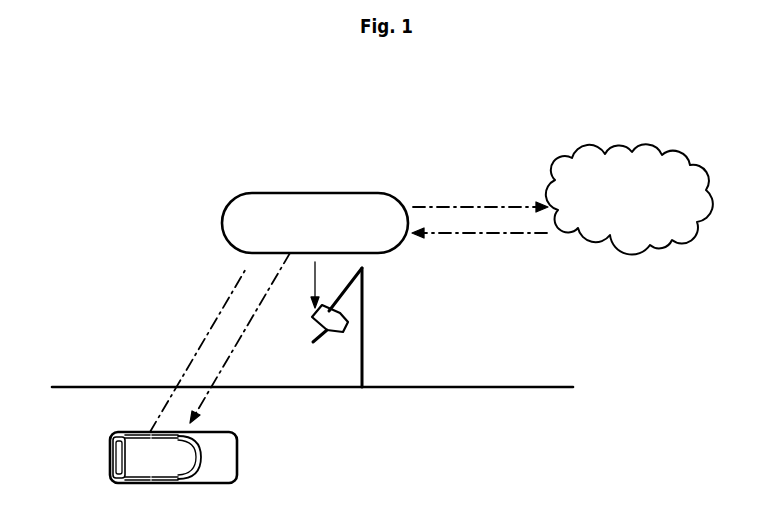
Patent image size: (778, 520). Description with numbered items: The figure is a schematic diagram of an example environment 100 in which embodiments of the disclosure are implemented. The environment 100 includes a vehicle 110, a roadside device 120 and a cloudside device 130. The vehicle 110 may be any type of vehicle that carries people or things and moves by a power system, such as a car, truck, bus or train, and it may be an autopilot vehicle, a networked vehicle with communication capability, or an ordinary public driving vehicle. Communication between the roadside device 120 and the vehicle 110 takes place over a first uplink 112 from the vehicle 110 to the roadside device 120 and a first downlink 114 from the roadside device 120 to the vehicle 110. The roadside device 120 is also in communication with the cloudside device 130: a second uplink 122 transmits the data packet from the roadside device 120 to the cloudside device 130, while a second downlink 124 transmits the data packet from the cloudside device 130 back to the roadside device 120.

The environment 100 is at (124, 118).
The vehicle 110 is at (237, 452).
The first uplink 112 is at (210, 328).
The first downlink 114 is at (228, 357).
The roadside device 120 is at (335, 193).
The second uplink 122 is at (468, 206).
The second downlink 124 is at (468, 233).
The cloudside device 130 is at (683, 148).